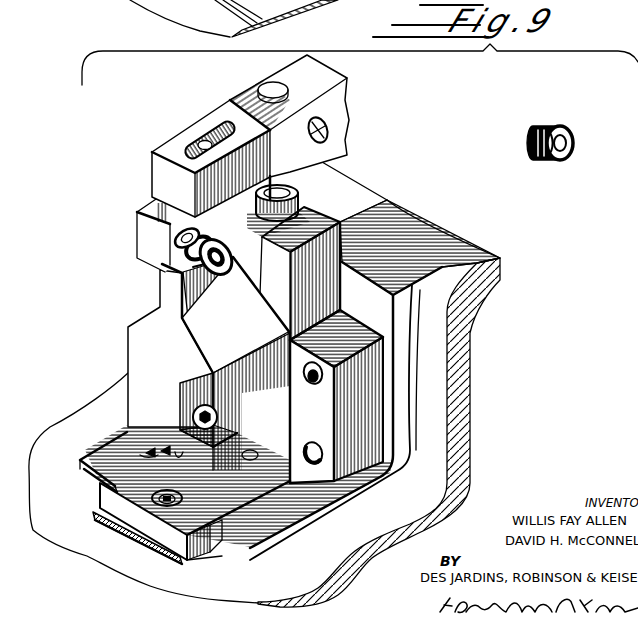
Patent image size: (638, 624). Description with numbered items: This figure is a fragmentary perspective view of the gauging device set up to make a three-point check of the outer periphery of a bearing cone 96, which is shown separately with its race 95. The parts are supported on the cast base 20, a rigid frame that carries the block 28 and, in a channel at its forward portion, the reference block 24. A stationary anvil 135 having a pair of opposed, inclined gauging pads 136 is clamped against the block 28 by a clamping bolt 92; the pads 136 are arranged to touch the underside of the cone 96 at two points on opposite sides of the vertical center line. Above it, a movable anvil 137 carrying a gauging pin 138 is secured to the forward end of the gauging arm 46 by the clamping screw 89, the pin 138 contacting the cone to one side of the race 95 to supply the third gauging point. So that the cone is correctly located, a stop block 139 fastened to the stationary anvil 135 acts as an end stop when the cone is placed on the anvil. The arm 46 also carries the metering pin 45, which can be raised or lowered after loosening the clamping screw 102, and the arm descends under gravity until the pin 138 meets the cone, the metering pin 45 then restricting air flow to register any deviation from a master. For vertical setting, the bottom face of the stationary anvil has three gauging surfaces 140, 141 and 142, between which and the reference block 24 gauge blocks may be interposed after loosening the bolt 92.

The base 20 is at (468, 406).
The reference block 24 is at (100, 485).
The block 28 is at (340, 290).
The metering pin 45 is at (298, 196).
The gauging arm 46 is at (268, 136).
The clamping bolt 89 is at (202, 148).
The bolt 92 is at (195, 412).
The race 95 is at (548, 126).
The cone 96 is at (232, 258).
The clamping screw 102 is at (327, 133).
The stationary anvil 135 is at (138, 355).
The gauging pads 136 is at (212, 278).
The movable anvil 137 is at (258, 183).
The gauging pin 138 is at (176, 238).
The stop block 139 is at (142, 220).
The gauging surface 140 is at (145, 453).
The gauging surface 141 is at (189, 452).
The gauging surface 142 is at (200, 460).